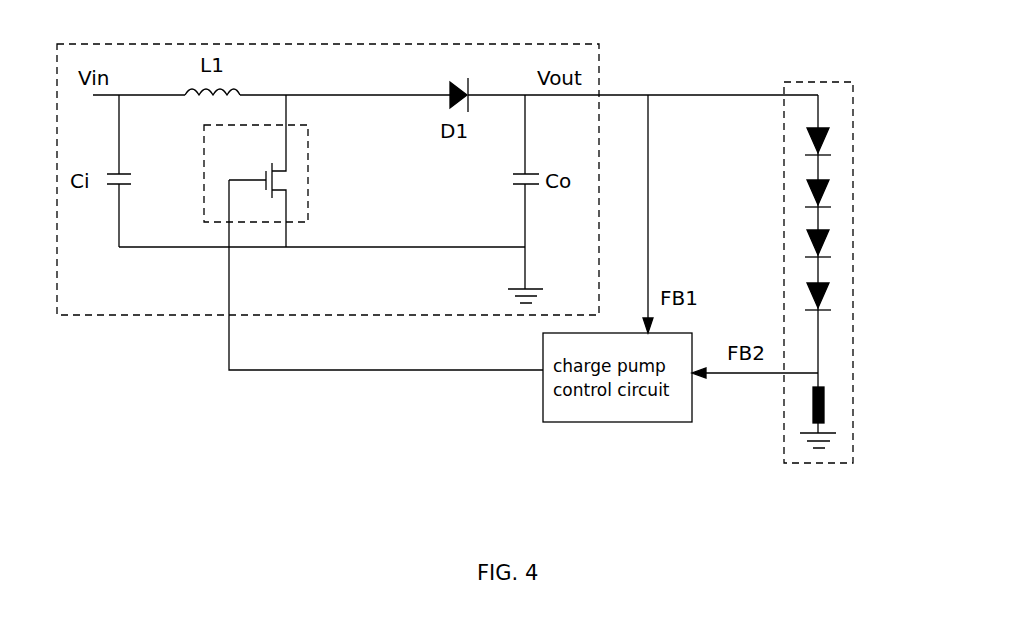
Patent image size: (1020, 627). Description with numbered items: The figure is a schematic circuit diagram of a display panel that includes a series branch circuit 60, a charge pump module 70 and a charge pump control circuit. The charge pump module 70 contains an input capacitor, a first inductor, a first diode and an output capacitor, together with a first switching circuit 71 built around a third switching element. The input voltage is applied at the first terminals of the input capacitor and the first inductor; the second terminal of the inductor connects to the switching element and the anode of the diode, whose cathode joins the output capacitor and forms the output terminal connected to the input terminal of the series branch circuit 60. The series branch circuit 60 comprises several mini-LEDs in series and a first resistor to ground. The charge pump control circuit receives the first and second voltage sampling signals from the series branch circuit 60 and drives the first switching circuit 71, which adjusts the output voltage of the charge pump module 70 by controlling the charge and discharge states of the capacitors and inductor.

The series branch circuit 60 is at (825, 82).
The charge pump module 70 is at (600, 77).
The first switching circuit 71 is at (308, 168).